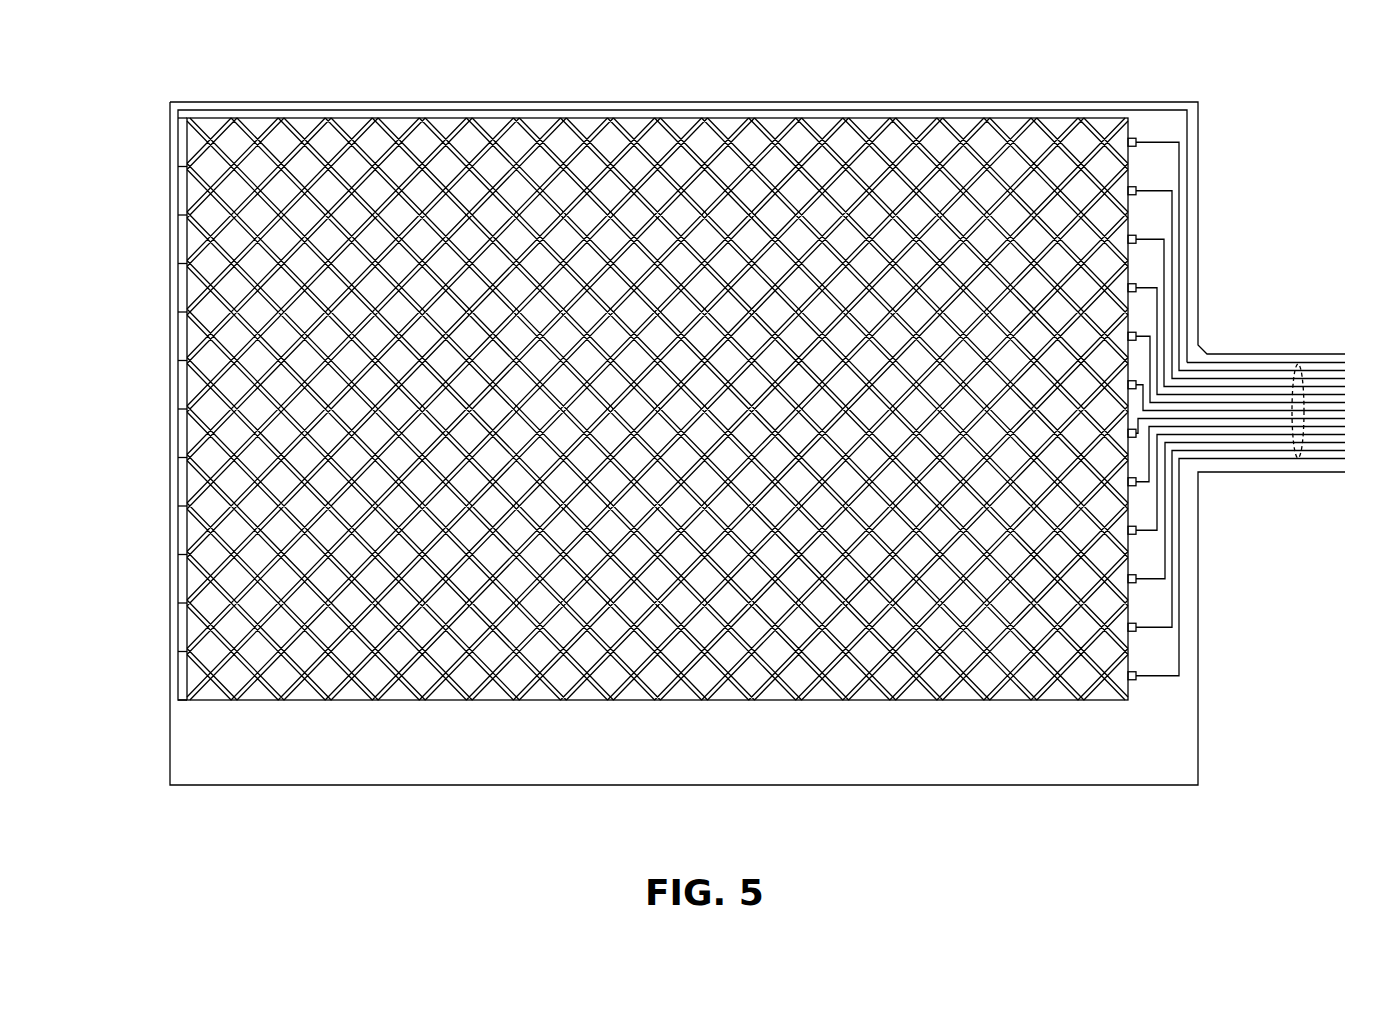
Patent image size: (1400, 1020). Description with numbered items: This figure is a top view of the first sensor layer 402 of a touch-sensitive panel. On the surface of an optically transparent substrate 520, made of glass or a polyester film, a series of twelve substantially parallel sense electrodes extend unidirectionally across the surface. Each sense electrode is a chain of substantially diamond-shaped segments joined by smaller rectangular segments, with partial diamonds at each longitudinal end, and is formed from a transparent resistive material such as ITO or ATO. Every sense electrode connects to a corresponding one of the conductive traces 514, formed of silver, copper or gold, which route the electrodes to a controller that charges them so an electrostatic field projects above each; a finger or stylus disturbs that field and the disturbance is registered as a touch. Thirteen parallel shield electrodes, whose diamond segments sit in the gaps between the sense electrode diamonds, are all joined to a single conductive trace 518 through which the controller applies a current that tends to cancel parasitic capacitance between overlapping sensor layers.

The first sensor layer 402 is at (1281, 124).
The conductive traces 514 is at (1298, 460).
The conductive trace 518 is at (1258, 362).
The substrate 520 is at (1187, 722).